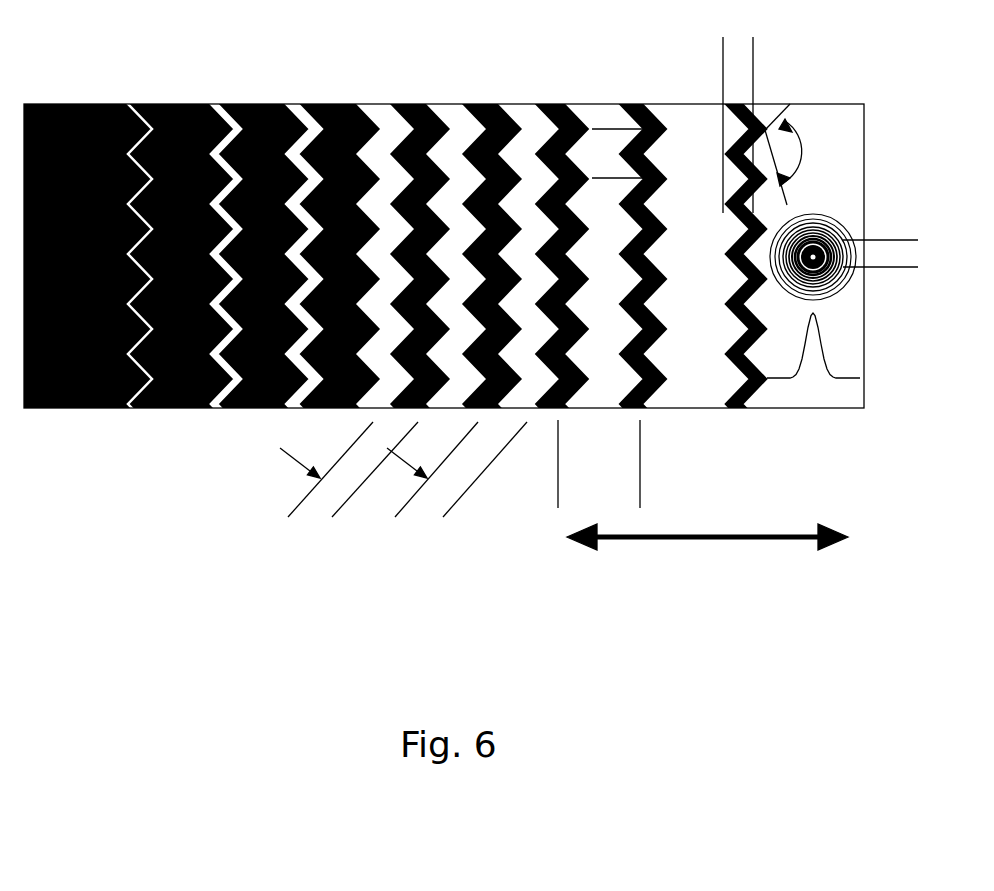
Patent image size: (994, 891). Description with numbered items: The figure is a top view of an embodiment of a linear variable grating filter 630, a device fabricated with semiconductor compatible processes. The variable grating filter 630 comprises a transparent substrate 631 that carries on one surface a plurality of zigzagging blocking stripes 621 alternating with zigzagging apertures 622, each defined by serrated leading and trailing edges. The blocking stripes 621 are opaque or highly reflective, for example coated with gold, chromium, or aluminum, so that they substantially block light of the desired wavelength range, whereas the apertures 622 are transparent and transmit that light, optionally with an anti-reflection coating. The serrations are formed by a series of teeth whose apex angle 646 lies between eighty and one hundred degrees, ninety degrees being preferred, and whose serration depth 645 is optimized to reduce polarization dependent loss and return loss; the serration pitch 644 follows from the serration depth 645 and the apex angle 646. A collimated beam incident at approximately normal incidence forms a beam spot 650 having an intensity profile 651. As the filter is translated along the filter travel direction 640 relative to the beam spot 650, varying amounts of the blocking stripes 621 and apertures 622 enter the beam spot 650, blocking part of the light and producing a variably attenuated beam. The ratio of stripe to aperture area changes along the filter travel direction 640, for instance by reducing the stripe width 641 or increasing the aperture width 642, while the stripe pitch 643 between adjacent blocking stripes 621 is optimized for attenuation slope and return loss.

The blocking stripes 621 is at (175, 410).
The apertures 622 is at (288, 410).
The variable grating filter 630 is at (391, 390).
The transparent substrate 631 is at (88, 104).
The filter travel direction 640 is at (722, 539).
The stripe width 641 is at (357, 511).
The aperture width 642 is at (461, 511).
The stripe pitch 643 is at (493, 478).
The serration pitch 644 is at (621, 237).
The serration depth 645 is at (660, 77).
The apex angle 646 is at (796, 155).
The beam spot 650 is at (900, 327).
The intensity profile 651 is at (820, 380).